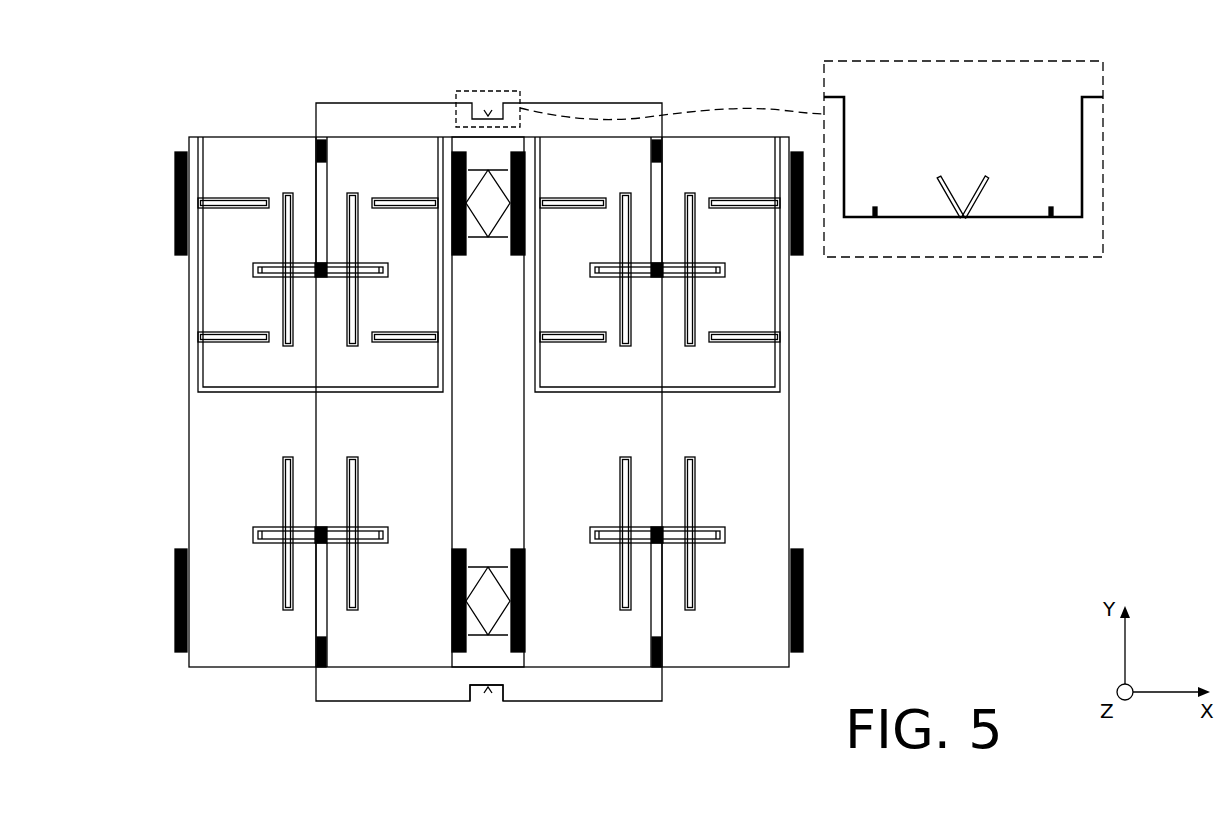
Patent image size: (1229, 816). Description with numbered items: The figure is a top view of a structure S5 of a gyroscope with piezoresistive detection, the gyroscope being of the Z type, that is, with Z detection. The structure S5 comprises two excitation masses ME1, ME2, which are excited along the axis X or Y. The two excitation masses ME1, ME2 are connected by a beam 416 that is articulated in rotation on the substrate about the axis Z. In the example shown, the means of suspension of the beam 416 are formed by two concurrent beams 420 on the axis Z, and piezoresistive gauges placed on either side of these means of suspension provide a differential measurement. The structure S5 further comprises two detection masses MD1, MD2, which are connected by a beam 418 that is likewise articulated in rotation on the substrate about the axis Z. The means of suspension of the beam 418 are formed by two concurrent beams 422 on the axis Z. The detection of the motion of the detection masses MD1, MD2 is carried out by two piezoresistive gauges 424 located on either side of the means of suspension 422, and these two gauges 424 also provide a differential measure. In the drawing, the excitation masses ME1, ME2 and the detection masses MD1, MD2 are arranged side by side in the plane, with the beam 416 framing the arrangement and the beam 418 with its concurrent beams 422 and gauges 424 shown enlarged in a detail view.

The structure S5 is at (624, 77).
The beam 416 is at (648, 690).
The beam 418 is at (362, 111).
The concurrent beams 420 is at (483, 703).
The concurrent beams 422 is at (968, 185).
The piezoresistive gauges 424 is at (875, 205).
The excitation mass ME1 is at (766, 402).
The excitation mass ME2 is at (212, 403).
The detection mass MD1 is at (685, 373).
The detection mass MD2 is at (292, 373).